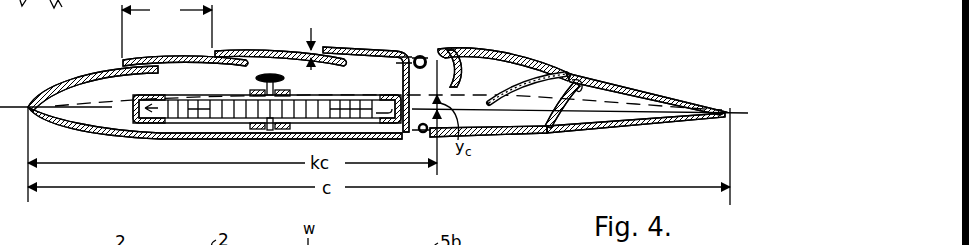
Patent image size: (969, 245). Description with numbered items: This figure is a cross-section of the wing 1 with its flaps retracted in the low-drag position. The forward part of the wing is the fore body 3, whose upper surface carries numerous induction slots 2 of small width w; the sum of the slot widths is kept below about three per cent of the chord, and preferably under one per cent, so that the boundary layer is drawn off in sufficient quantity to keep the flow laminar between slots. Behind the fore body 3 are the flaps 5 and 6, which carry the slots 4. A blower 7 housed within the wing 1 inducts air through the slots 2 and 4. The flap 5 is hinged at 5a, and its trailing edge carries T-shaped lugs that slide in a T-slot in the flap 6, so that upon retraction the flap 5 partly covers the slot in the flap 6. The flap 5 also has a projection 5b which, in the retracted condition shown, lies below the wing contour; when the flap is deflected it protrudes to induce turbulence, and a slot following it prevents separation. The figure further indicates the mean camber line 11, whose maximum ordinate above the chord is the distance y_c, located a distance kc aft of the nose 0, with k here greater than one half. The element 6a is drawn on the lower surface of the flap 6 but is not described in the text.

The nose 0 is at (375, 147).
The wing 1 is at (115, 137).
The induction slots 2 is at (125, 59).
The fore body 3 is at (76, 74).
The slots 4 is at (431, 52).
The flap 5 is at (503, 50).
The hinge 5a is at (412, 55).
The projection 5b is at (420, 55).
The flap 6 is at (626, 128).
The lower flap skin 6a is at (497, 134).
The blower 7 is at (210, 94).
The mean camber line 11 is at (389, 94).